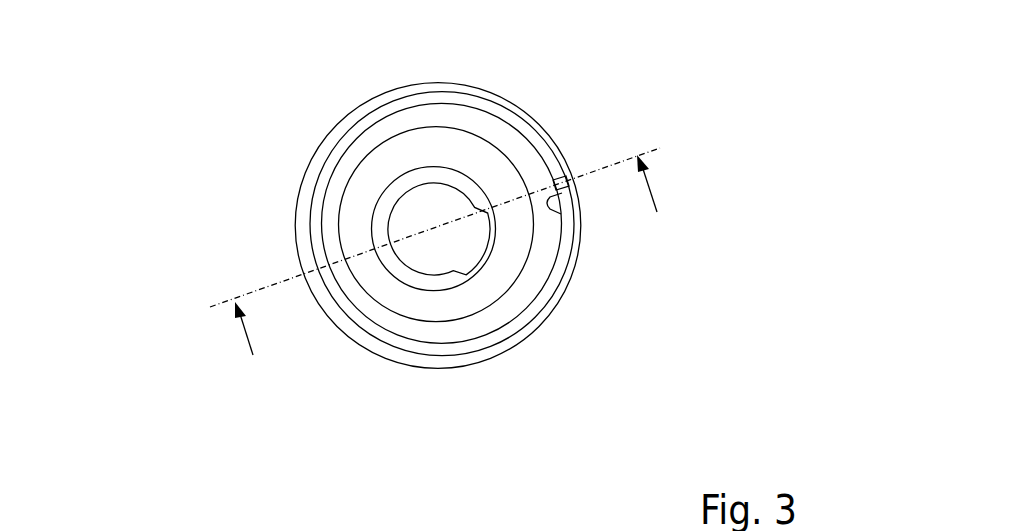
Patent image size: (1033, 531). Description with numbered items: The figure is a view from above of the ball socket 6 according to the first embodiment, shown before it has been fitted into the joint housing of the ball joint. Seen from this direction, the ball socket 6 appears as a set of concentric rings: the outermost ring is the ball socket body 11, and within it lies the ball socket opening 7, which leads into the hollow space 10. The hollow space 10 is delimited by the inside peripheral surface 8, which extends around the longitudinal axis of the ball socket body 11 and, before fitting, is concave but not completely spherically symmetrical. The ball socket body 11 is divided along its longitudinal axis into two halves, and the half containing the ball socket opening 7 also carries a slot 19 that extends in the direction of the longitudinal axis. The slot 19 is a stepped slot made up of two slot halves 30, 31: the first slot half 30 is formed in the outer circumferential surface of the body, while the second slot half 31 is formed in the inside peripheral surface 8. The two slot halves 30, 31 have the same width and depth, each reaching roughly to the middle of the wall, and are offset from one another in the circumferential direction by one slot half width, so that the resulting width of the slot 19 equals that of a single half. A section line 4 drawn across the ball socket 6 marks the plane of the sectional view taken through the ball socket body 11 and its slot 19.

The section line IV-IV 4 is at (440, 255).
The ball socket 6 is at (419, 227).
The ball socket opening 7 is at (382, 338).
The inside peripheral surface 8 is at (486, 154).
The hollow space 10 is at (493, 286).
The ball socket body 11 is at (584, 272).
The slot 19 is at (603, 162).
The first slot half 30 is at (568, 176).
The second slot half 31 is at (551, 208).